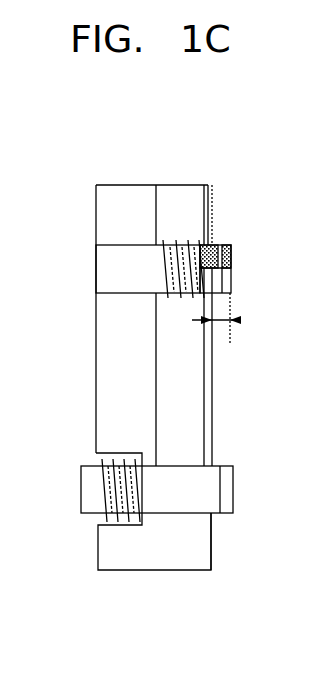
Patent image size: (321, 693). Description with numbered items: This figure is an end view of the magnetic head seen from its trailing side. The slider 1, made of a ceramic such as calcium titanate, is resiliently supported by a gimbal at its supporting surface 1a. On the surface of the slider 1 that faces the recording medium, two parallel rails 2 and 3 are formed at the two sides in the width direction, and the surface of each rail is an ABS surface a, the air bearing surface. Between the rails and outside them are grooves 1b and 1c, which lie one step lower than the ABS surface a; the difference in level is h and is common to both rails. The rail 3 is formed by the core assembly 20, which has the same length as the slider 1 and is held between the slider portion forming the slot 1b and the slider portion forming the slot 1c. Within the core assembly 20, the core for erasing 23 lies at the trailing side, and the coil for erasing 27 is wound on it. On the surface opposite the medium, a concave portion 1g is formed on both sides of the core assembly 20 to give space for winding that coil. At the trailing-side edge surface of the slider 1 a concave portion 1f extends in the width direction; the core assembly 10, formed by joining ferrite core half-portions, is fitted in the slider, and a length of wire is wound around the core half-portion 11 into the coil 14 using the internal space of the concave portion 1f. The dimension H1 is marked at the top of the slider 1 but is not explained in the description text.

The base member 1 is at (166, 575).
The first wall portion 1a is at (96, 371).
The second wall portion 1b is at (212, 372).
The end face 1c is at (209, 199).
The inner surface 1f is at (201, 403).
The step portion 1g is at (97, 453).
The hole H1 is at (155, 178).
The pressing member 2 is at (236, 240).
The support member 3 is at (226, 525).
The fixing assembly 10 is at (155, 222).
The plate 11 is at (96, 276).
The fastening portion 14 is at (183, 250).
The lower plate 20 is at (238, 462).
The projection 23 is at (172, 482).
The fastening portion 27 is at (97, 498).
The gap a is at (231, 282).
The height h is at (216, 329).